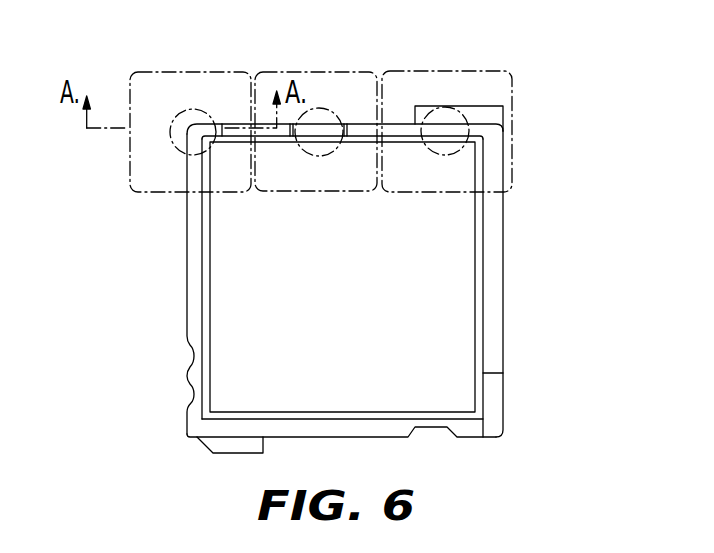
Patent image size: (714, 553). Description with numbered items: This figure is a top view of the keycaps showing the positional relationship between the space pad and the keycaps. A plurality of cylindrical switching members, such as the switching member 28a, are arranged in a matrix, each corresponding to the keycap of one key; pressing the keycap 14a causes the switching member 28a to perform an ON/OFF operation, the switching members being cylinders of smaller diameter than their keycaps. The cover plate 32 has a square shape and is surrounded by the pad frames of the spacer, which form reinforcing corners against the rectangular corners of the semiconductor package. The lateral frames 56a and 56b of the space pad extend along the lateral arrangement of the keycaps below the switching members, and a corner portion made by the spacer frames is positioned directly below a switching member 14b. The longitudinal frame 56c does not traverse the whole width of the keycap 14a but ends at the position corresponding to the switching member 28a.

The keycap 14a is at (180, 76).
The switching member 14b is at (458, 75).
The switching member 28a is at (180, 137).
The lateral frame 56a is at (230, 137).
The lateral frame 56b is at (483, 253).
The longitudinal frame 56c is at (187, 336).
The cover plate 32 is at (467, 368).